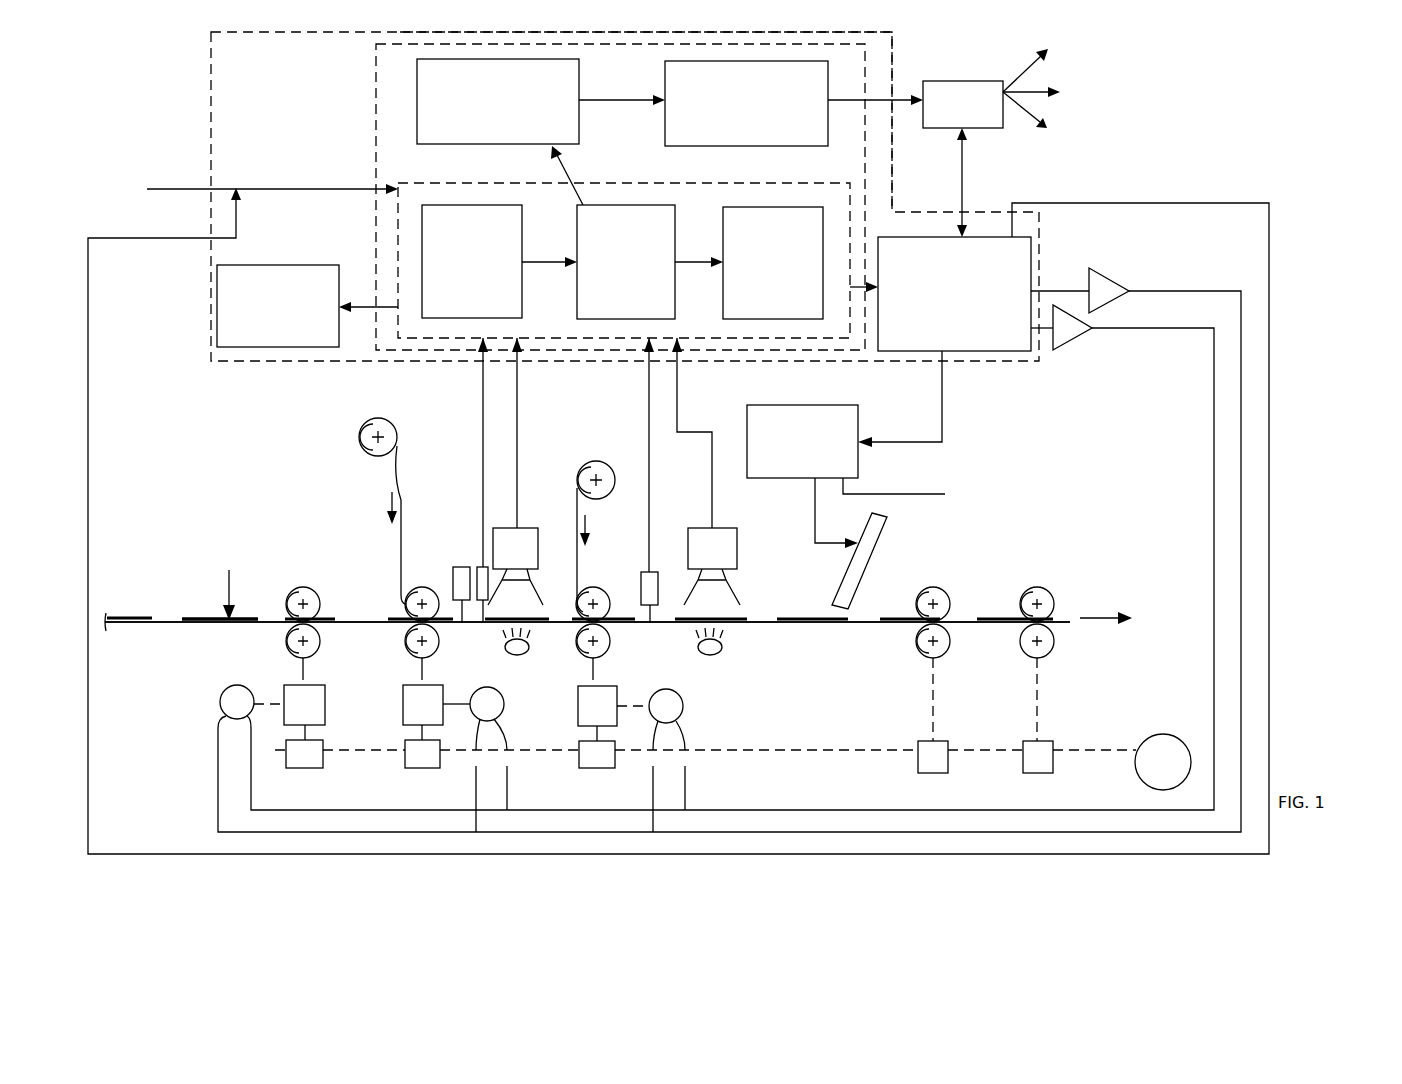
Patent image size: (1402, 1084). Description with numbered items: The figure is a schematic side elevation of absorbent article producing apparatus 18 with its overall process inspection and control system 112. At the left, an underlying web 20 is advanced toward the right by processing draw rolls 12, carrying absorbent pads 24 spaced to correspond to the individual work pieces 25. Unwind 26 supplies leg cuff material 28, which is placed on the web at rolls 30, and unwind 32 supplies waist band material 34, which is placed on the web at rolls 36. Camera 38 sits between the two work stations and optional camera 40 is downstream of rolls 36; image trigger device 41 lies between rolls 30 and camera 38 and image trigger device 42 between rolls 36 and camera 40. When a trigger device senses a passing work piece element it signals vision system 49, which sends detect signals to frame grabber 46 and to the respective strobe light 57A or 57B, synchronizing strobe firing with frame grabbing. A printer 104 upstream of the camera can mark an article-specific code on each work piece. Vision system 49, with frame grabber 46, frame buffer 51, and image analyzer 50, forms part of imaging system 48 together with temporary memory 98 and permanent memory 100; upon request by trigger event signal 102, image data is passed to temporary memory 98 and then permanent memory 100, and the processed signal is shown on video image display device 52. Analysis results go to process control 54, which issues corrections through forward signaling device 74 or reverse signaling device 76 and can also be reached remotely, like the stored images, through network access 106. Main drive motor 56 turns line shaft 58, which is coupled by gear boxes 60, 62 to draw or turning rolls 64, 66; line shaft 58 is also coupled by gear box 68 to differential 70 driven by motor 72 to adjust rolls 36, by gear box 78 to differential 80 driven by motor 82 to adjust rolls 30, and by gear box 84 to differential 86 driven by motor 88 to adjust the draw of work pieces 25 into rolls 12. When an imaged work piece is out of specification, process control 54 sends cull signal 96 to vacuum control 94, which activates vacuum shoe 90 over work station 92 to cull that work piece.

The absorbent article producing apparatus 18 is at (200, 112).
The process inspection and control system 112 is at (859, 27).
The imaging system 48 is at (374, 72).
The vision system 49 is at (416, 183).
The temporary memory 98 is at (579, 68).
The permanent memory 100 is at (665, 62).
The frame grabber 46 is at (447, 318).
The frame buffer 51 is at (600, 205).
The image analyzer 50 is at (780, 319).
The trigger event signal 102 is at (292, 168).
The video image display device 52 is at (217, 318).
The process control 54 is at (980, 351).
The network access 106 is at (948, 81).
The forward signaling device 74 is at (1117, 298).
The reverse signaling device 76 is at (1068, 346).
The cull signal 96 is at (908, 444).
The vacuum control 94 is at (907, 491).
The vacuum shoe 90 is at (868, 562).
The absorbent pads 24 is at (198, 618).
The work pieces 25 is at (230, 581).
The underlying web 20 is at (265, 625).
The work station 92 is at (830, 626).
The processing draw rolls 12 is at (318, 627).
The rolls 30 is at (437, 627).
The rolls 36 is at (612, 626).
The draw rolls or turning rolls 66 is at (947, 594).
The draw rolls or turning rolls 64 is at (1052, 596).
The unwind 26 is at (365, 426).
The leg cuff material 28 is at (395, 456).
The unwind 32 is at (598, 461).
The waist band material 34 is at (578, 490).
The camera 38 is at (544, 541).
The optional camera 40 is at (737, 552).
The printer 104 is at (463, 567).
The image trigger device 41 is at (462, 626).
The image trigger device 42 is at (658, 592).
The strobe light 57A is at (529, 648).
The strobe light 57B is at (722, 650).
The motor 88 is at (222, 691).
The differential 86 is at (325, 705).
The gear box 84 is at (323, 762).
The differential 80 is at (403, 712).
The gear box 78 is at (425, 768).
The motor 82 is at (492, 689).
The differential 70 is at (578, 700).
The gear box 68 is at (579, 764).
The motor 72 is at (683, 697).
The line shaft 58 is at (830, 750).
The gear box 62 is at (938, 741).
The gear box 60 is at (1045, 741).
The main drive motor 56 is at (1160, 734).